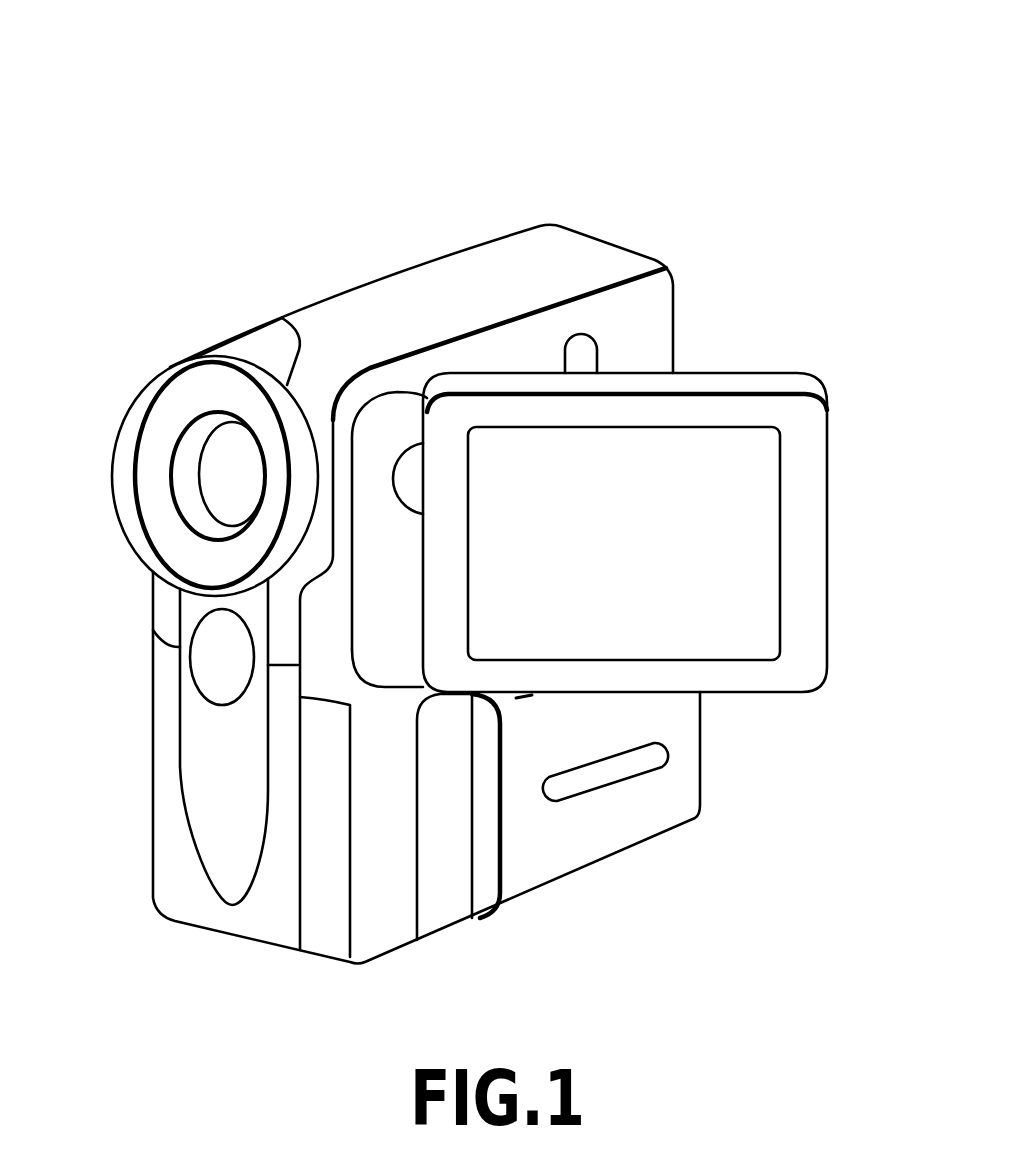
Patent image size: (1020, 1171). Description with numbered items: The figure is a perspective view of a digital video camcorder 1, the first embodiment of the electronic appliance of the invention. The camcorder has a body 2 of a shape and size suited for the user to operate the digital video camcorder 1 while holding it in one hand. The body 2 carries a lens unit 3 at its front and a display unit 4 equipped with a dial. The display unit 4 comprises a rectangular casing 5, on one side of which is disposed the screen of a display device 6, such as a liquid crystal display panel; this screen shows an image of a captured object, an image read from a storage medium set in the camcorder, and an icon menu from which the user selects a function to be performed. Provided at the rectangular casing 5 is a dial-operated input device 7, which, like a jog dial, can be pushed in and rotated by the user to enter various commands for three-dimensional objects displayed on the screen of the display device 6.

The digital video camcorder 1 is at (470, 488).
The body 2 is at (371, 288).
The lens unit 3 is at (134, 454).
The display unit 4 is at (660, 461).
The rectangular casing 5 is at (827, 403).
The display device 6 is at (767, 530).
The dial-operated input device 7 is at (405, 442).